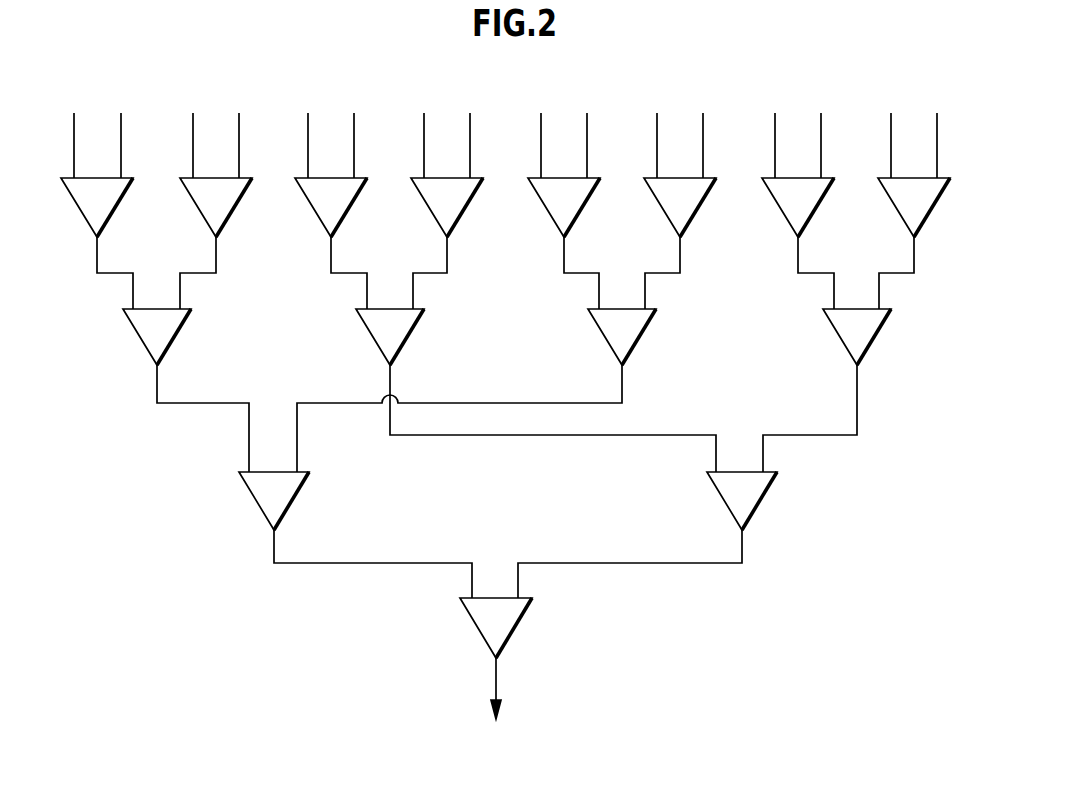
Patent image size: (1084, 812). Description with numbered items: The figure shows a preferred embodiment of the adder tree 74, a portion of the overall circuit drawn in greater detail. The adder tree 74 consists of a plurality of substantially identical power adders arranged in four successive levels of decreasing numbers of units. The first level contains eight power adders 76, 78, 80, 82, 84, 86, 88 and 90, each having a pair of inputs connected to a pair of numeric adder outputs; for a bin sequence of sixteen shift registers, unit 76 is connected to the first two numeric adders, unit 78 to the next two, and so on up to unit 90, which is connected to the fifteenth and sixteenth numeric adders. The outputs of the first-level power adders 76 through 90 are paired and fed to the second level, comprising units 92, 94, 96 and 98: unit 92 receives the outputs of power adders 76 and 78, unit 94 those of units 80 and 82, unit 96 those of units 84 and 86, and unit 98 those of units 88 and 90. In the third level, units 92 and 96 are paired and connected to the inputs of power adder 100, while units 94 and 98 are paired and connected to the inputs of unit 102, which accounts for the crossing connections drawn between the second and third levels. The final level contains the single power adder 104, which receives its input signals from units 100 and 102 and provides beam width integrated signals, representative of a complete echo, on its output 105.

The adder tree 74 is at (246, 620).
The power adder 76 is at (104, 198).
The power adder 78 is at (223, 198).
The power adder 80 is at (338, 198).
The power adder 82 is at (454, 198).
The power adder 84 is at (571, 198).
The power adder 86 is at (687, 198).
The power adder 88 is at (805, 198).
The power adder 90 is at (921, 198).
The power adder 92 is at (163, 327).
The power adder 94 is at (396, 327).
The power adder 96 is at (628, 327).
The power adder 98 is at (863, 327).
The power adder 100 is at (283, 492).
The power adder 102 is at (756, 492).
The power adder 104 is at (506, 618).
The output 105 is at (495, 684).